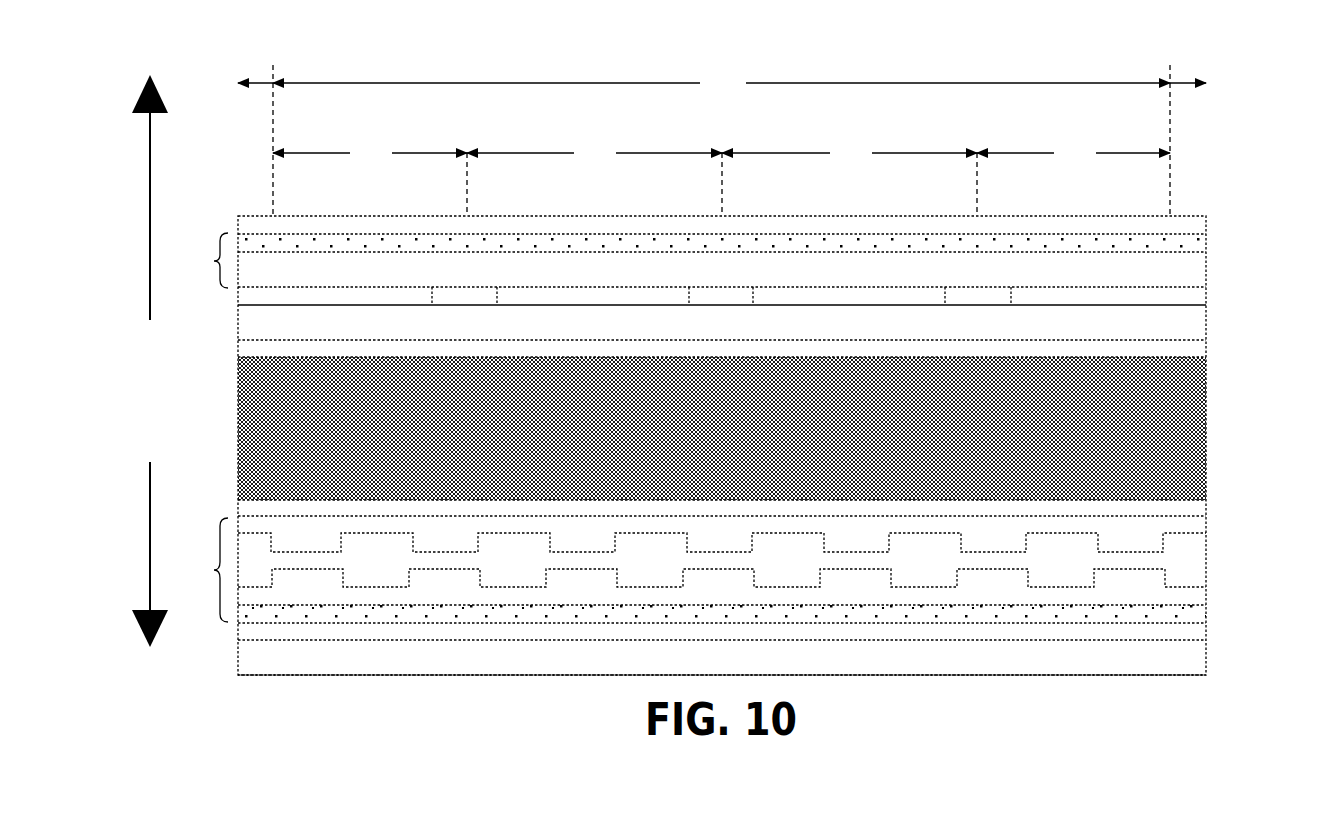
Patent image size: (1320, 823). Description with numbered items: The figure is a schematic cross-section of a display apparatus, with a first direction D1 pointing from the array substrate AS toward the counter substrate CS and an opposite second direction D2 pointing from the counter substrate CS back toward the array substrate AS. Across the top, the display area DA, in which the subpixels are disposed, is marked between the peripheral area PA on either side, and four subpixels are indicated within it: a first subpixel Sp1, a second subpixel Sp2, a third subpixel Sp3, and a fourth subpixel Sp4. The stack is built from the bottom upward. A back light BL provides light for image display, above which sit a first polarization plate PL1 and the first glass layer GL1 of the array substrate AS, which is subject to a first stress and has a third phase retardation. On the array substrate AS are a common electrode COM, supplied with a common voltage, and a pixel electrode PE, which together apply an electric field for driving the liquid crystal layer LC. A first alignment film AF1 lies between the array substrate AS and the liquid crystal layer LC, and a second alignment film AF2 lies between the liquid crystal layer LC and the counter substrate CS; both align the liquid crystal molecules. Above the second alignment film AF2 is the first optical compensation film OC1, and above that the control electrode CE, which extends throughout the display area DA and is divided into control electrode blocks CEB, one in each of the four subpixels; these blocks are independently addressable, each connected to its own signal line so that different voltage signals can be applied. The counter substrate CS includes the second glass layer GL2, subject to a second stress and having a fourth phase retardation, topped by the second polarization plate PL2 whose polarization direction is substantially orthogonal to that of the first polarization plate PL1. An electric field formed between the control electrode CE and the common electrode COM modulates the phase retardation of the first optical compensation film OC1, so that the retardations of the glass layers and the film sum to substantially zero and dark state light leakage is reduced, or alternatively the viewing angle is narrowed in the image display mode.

The first direction D1 is at (132, 182).
The second direction D2 is at (132, 560).
The peripheral area PA is at (718, 136).
The display area DA is at (721, 83).
The first subpixel Sp1 is at (370, 180).
The second subpixel Sp2 is at (594, 180).
The third subpixel Sp3 is at (849, 180).
The fourth subpixel Sp4 is at (1073, 154).
The second polarization plate PL2 is at (1213, 224).
The second glass layer GL2 is at (1213, 244).
The counter substrate CS is at (215, 261).
The control electrode CE is at (1213, 296).
The control electrode blocks CEB is at (721, 296).
The first optical compensation film OC1 is at (1213, 321).
The second alignment film AF2 is at (1213, 349).
The liquid crystal layer LC is at (1213, 430).
The first alignment film AF1 is at (1213, 508).
The array substrate AS is at (215, 570).
The pixel electrode PE is at (1213, 542).
The common electrode COM is at (1213, 578).
The first glass layer GL1 is at (1213, 613).
The first polarization plate PL1 is at (1213, 633).
The back light BL is at (1213, 661).